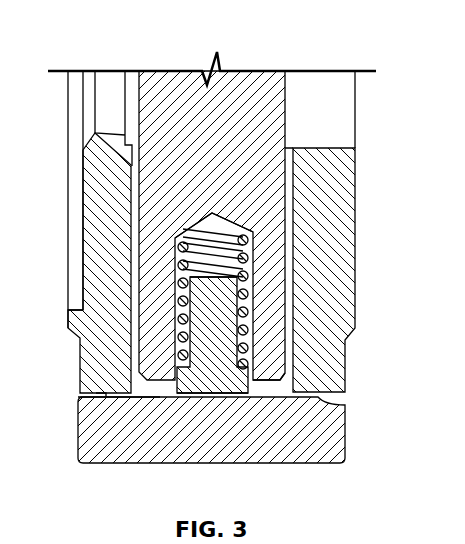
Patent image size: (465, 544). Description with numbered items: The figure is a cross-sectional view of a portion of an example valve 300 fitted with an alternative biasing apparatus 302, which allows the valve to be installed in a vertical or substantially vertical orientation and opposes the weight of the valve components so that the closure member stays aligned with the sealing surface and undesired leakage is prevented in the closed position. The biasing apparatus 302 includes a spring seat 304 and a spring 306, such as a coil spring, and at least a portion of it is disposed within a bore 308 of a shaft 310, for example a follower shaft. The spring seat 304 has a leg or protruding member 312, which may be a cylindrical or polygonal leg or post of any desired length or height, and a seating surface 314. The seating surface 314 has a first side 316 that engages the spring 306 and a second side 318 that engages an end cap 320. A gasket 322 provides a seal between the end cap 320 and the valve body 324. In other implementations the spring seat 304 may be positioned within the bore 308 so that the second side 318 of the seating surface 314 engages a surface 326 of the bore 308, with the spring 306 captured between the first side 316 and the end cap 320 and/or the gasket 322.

The valve 300 is at (100, 30).
The biasing apparatus 302 is at (153, 325).
The spring seat 304 is at (228, 330).
The spring 306 is at (250, 272).
The bore 308 is at (180, 268).
The shaft 310 is at (150, 178).
The leg or protruding member 312 is at (198, 285).
The seating surface 314 is at (256, 378).
The first side 316 is at (98, 394).
The second side 318 is at (223, 397).
The end cap 320 is at (78, 423).
The gasket 322 is at (162, 397).
The valve body 324 is at (356, 86).
The surface 326 is at (250, 228).